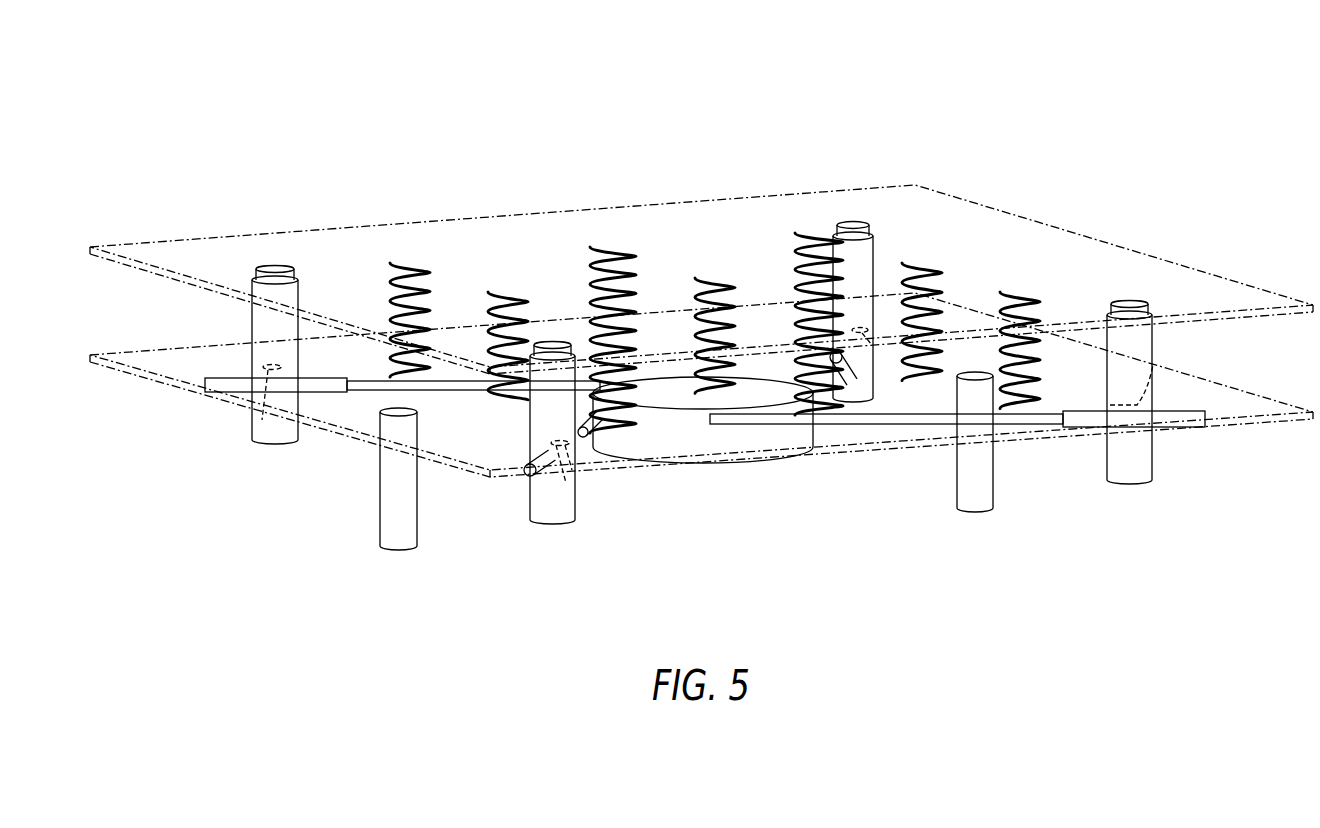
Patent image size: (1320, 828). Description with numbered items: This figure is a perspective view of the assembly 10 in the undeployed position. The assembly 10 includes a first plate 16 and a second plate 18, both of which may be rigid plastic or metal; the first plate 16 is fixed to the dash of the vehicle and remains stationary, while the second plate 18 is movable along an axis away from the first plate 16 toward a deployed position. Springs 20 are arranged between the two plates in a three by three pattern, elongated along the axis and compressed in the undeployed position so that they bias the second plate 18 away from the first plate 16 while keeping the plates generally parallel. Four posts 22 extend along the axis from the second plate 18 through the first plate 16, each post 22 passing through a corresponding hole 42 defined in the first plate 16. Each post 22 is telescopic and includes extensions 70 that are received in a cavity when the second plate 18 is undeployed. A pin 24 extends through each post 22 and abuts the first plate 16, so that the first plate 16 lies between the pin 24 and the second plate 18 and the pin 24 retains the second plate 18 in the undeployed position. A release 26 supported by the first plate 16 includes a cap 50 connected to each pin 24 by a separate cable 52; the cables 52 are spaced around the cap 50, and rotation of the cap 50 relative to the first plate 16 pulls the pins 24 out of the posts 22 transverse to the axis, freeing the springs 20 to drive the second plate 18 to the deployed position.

The assembly 10 is at (1060, 97).
The first plate 16 is at (1263, 423).
The second plate 18 is at (1266, 283).
The spring 20 is at (590, 340).
The post 22 is at (276, 266).
The pin 24 is at (215, 388).
The release 26 is at (668, 462).
The hole 42 is at (250, 430).
The cap 50 is at (735, 440).
The cable 52 is at (362, 393).
The extension 70 is at (252, 330).